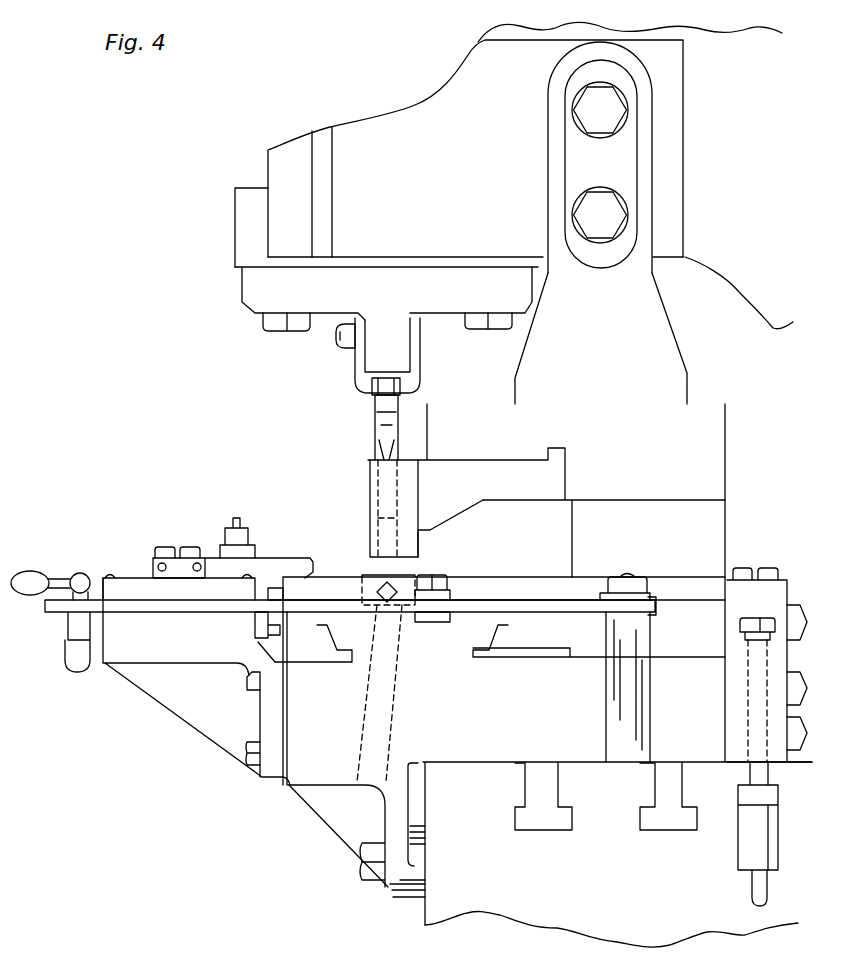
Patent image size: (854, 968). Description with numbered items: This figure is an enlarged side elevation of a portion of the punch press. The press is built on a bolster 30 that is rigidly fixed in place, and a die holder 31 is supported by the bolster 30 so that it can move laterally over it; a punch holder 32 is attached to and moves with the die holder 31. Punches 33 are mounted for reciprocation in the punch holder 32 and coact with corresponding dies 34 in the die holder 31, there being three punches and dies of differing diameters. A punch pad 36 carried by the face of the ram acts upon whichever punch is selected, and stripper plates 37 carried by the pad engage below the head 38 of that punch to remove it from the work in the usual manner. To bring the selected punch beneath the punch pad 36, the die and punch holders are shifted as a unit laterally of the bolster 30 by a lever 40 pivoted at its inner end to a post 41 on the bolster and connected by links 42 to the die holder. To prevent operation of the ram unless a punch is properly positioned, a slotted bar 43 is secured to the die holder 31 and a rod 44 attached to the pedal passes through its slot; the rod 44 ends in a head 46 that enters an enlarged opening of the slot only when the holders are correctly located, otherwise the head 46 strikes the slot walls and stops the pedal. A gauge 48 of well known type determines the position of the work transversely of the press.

The bolster 30 is at (457, 675).
The die holder 31 is at (542, 592).
The punch holder 32 is at (526, 488).
The punches 33 is at (395, 424).
The dies 34 is at (372, 575).
The punch pad 36 is at (377, 283).
The stripper plates 37 is at (357, 362).
The head 38 is at (370, 388).
The lever 40 is at (524, 606).
The post 41 is at (634, 636).
The links 42 is at (428, 622).
The slotted bar 43 is at (733, 648).
The rod 44 is at (752, 776).
The head 46 is at (768, 605).
The gauge 48 is at (133, 585).